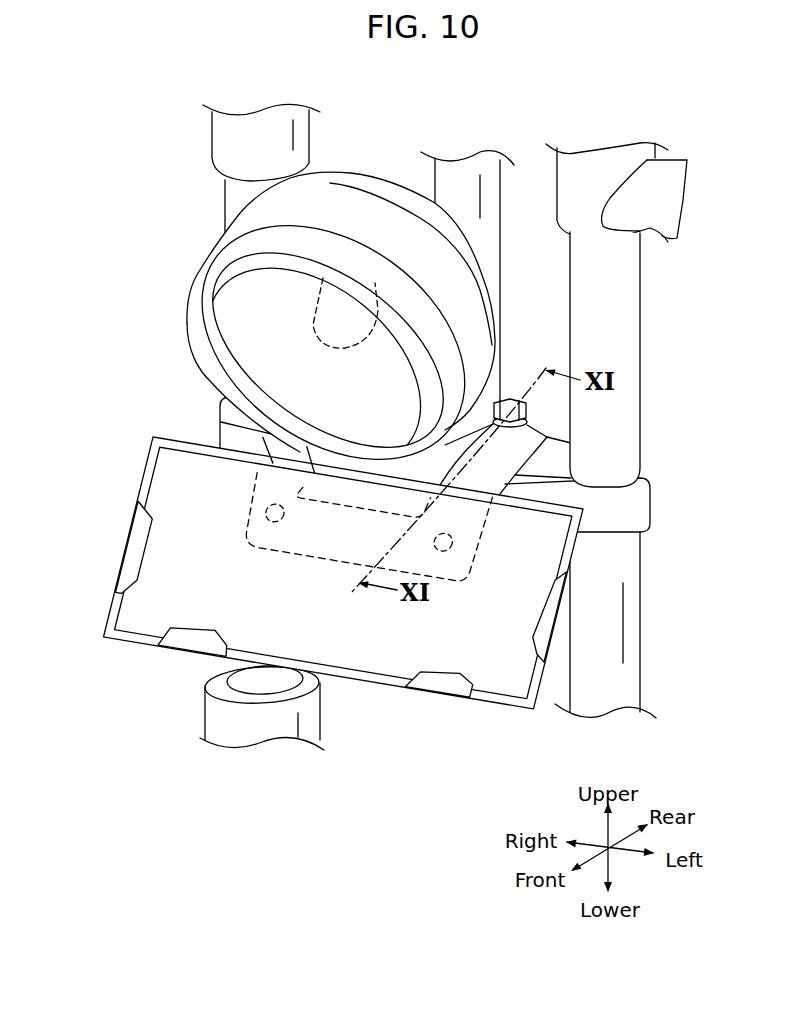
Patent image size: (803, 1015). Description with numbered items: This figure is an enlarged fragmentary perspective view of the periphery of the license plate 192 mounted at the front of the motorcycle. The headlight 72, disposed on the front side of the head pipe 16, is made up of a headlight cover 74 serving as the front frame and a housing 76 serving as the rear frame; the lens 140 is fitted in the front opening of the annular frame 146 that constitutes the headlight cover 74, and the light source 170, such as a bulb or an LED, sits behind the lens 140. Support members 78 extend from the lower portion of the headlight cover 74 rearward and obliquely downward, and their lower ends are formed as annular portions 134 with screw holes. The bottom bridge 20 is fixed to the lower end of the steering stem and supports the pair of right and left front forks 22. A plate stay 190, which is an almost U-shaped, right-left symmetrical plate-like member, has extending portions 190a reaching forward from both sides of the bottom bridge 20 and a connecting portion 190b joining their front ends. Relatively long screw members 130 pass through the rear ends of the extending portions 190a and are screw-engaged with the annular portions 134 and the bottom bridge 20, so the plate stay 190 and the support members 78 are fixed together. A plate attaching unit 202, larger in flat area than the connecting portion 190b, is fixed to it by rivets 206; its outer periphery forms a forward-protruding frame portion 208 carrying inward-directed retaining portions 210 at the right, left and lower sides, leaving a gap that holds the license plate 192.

The head pipe 16 is at (454, 180).
The bottom bridge 20 is at (637, 500).
The front forks 22 is at (641, 633).
The headlight 72 is at (188, 212).
The headlight cover 74 is at (231, 247).
The annular frame 146 is at (289, 342).
The housing 76 is at (330, 200).
The support members 78 is at (447, 443).
The screw members 130 is at (509, 402).
The annular portions 134 is at (566, 462).
The lens 140 is at (240, 352).
The light source 170 is at (312, 310).
The plate stay 190 is at (552, 422).
The extending portions 190a is at (511, 457).
The connecting portion 190b is at (365, 520).
The license plate 192 is at (363, 654).
The plate attaching unit 202 is at (342, 573).
The rivets 206 is at (359, 528).
The frame portion 208 is at (343, 573).
The retaining portions 210 is at (336, 604).